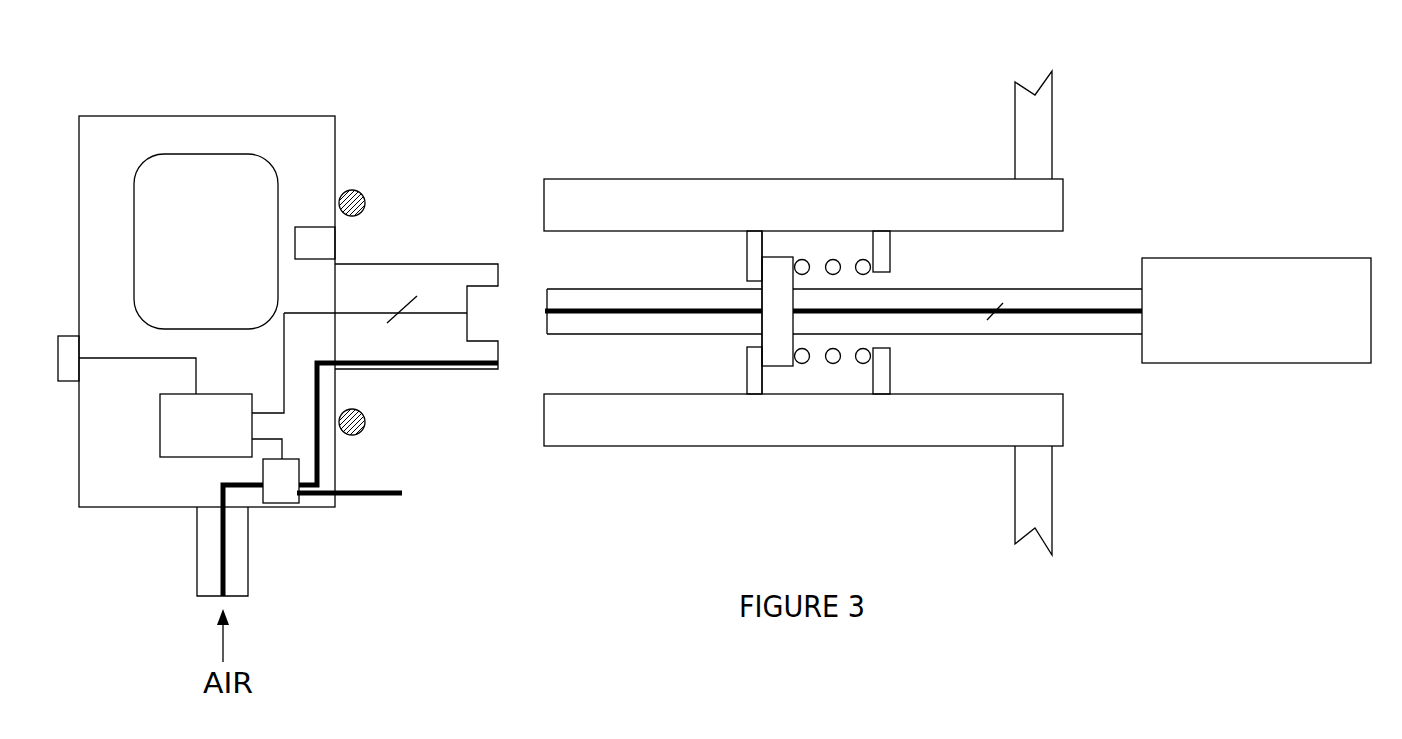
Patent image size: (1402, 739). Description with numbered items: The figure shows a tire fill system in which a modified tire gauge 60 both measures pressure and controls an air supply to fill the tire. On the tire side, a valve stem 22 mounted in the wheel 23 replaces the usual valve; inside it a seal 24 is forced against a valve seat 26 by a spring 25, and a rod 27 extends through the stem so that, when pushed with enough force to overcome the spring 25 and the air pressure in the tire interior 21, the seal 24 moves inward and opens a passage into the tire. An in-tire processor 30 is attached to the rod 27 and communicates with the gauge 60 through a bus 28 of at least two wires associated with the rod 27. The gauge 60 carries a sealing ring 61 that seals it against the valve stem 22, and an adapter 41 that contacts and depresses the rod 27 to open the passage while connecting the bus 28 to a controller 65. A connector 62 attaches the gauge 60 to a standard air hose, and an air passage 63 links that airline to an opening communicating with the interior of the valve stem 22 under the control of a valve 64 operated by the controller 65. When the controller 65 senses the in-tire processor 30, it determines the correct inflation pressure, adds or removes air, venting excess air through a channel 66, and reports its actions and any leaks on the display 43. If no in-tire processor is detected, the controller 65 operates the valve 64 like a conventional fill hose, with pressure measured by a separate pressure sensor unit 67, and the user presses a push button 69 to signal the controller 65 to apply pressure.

The tire interior 21 is at (1303, 180).
The valve stem 22 is at (607, 190).
The wheel 23 is at (1022, 108).
The seal 24 is at (777, 268).
The spring 25 is at (828, 363).
The valve seat 26 is at (754, 386).
The rod 27 is at (652, 327).
The bus 28 is at (594, 308).
The in-tire processor 30 is at (1205, 277).
The adapter 41 is at (408, 264).
The display 43 is at (150, 192).
The gauge 60 is at (208, 116).
The sealing ring 61 is at (360, 192).
The connector 62 is at (212, 560).
The air passage 63 is at (444, 368).
The valve 64 is at (287, 490).
The controller 65 is at (160, 432).
The channel 66 is at (388, 498).
The pressure sensor unit 67 is at (317, 247).
The push button 69 is at (60, 352).